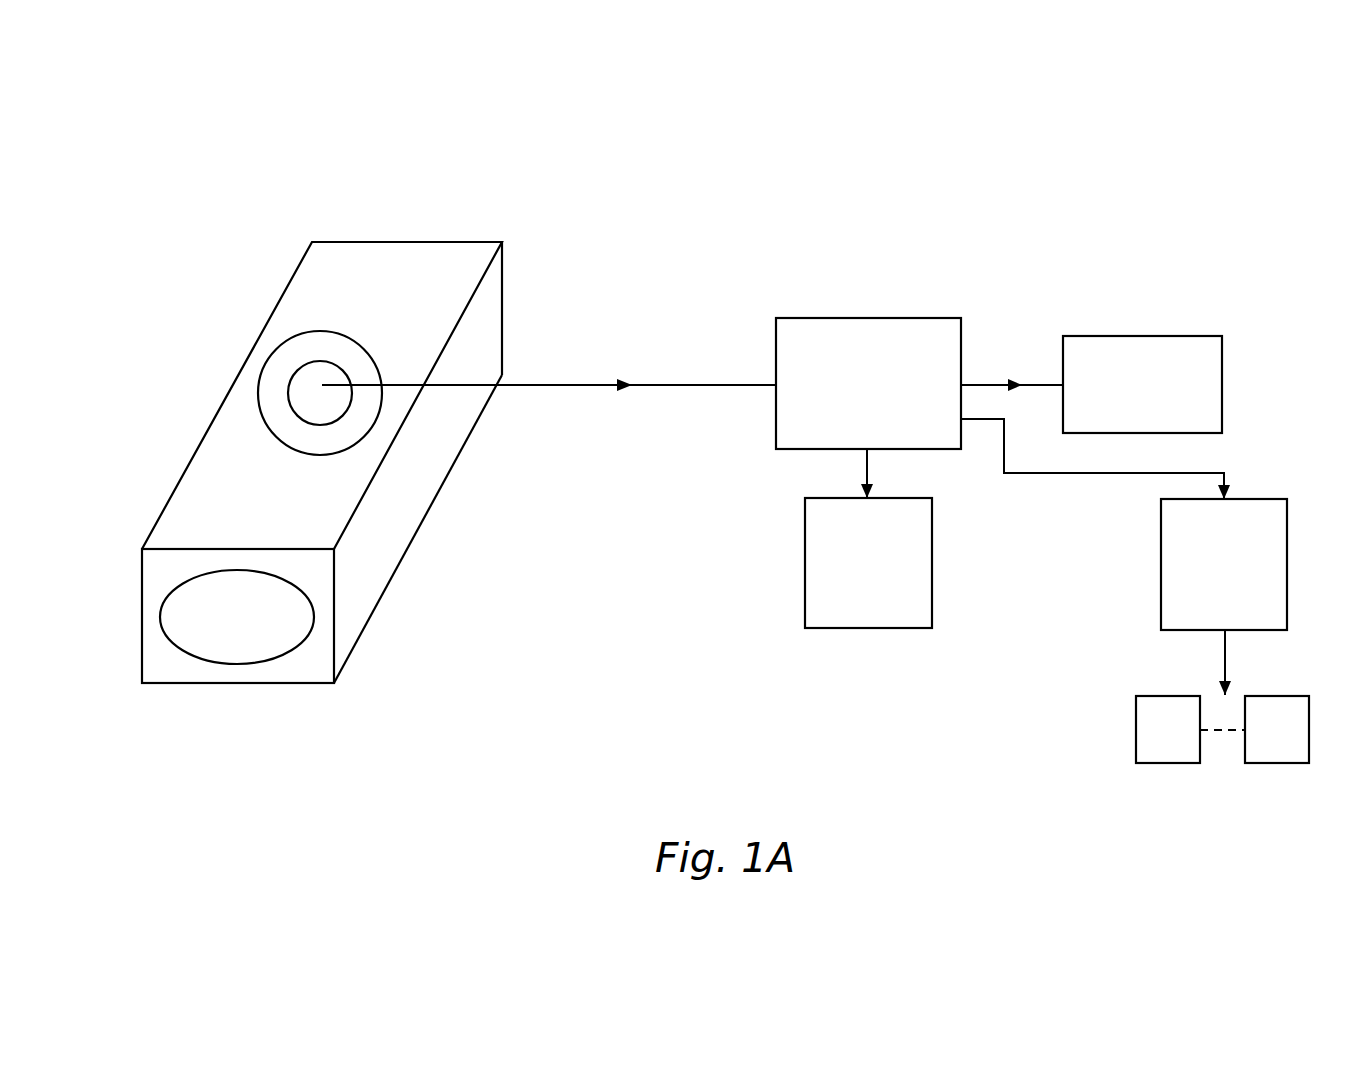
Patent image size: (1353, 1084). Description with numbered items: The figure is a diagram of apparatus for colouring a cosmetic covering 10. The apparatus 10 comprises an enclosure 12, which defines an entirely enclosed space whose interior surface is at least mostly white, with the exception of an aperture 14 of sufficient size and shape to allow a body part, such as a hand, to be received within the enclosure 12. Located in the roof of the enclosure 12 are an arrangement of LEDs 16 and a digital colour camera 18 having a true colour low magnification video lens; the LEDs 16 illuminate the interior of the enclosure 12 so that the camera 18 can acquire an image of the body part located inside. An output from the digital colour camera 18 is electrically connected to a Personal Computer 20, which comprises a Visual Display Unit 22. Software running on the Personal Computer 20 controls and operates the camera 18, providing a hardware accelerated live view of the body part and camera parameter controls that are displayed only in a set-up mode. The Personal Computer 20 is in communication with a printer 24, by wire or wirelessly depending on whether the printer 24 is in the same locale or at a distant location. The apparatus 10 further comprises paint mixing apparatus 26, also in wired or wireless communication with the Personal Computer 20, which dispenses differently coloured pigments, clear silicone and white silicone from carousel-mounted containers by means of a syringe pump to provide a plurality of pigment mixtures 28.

The apparatus for colouring a cosmetic covering 10 is at (1069, 222).
The enclosure 12 is at (440, 267).
The aperture 14 is at (228, 631).
The arrangement of LEDs 16 is at (272, 399).
The digital colour camera 18 is at (313, 375).
The Personal Computer 20 is at (857, 338).
The Visual Display Unit 22 is at (908, 560).
The printer 24 is at (1132, 350).
The paint mixing apparatus 26 is at (1256, 516).
The pigment mixtures 28 is at (1179, 752).